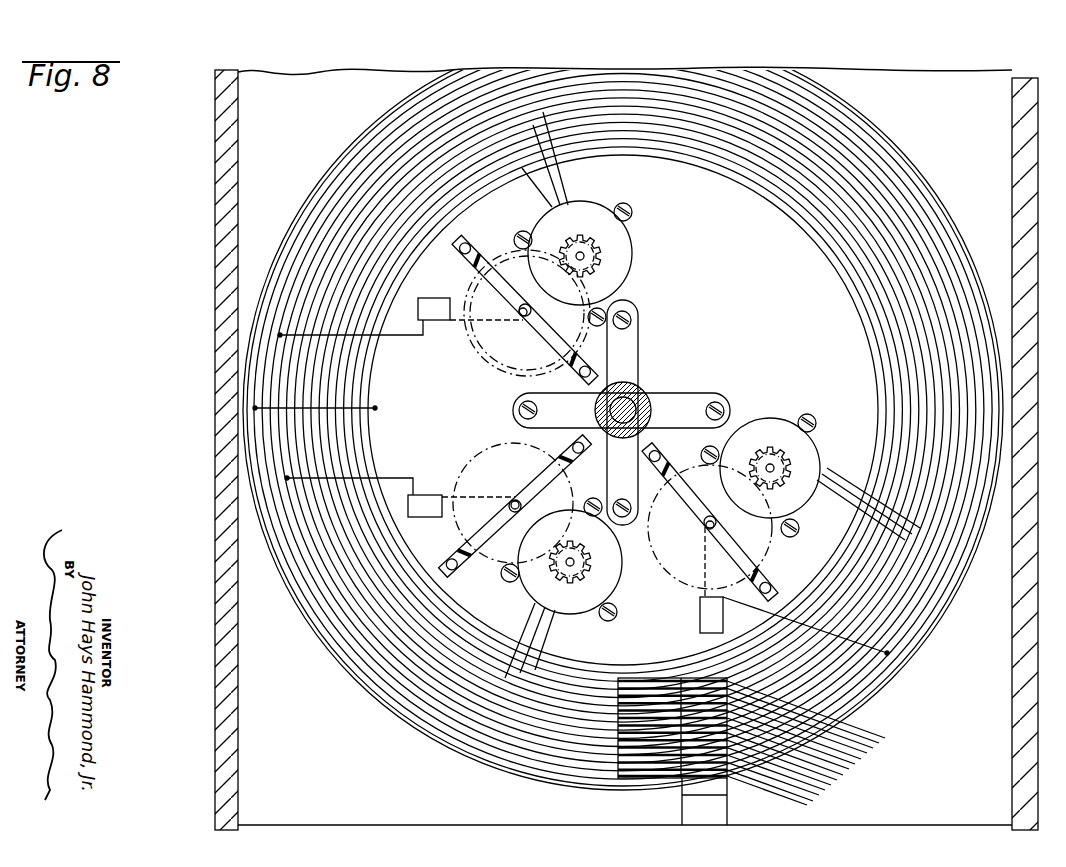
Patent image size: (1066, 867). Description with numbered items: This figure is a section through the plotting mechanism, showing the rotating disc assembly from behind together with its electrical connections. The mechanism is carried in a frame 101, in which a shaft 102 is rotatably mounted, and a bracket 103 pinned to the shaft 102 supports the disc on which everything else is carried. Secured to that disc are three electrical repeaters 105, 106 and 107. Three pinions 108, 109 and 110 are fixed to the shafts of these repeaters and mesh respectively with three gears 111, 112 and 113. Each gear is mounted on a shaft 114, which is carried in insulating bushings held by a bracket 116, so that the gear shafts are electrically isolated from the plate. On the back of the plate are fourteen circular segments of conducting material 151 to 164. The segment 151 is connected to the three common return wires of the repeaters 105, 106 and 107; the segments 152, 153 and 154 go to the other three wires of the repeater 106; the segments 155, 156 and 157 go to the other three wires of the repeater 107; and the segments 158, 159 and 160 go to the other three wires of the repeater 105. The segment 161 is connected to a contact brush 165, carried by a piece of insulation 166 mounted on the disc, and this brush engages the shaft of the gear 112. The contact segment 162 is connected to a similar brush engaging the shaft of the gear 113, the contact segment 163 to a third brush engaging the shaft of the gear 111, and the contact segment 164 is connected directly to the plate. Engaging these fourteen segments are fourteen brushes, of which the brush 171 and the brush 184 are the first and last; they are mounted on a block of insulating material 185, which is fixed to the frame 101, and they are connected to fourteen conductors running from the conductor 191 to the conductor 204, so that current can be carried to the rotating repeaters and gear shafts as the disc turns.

The frame 101 is at (225, 222).
The shaft 102 is at (645, 388).
The bracket 103 is at (627, 358).
The electrical repeater 105 is at (772, 418).
The electrical repeater 106 is at (620, 587).
The electrical repeater 107 is at (623, 240).
The pinion 108 is at (785, 466).
The pinion 109 is at (582, 565).
The pinion 110 is at (596, 257).
The gear 111 is at (772, 552).
The gear 112 is at (497, 445).
The gear 113 is at (486, 363).
The shaft 114 is at (518, 316).
The bracket 116 is at (492, 245).
The circular segment 151 is at (806, 233).
The circular segment 152 is at (828, 244).
The circular segment 153 is at (848, 258).
The circular segment 154 is at (867, 275).
The circular segment 155 is at (884, 288).
The circular segment 156 is at (899, 304).
The circular segment 157 is at (912, 316).
The circular segment 158 is at (924, 329).
The circular segment 159 is at (936, 343).
The circular segment 160 is at (947, 359).
The circular segment 161 is at (957, 372).
The contact segment 162 is at (967, 386).
The contact segment 163 is at (976, 401).
The contact segment 164 is at (984, 416).
The contact brush 165 is at (462, 322).
The piece of insulation 166 is at (440, 298).
The brush 171 is at (643, 678).
The brush 184 is at (650, 778).
The block of insulating material 185 is at (700, 795).
The conductor 191 is at (862, 724).
The conductor 204 is at (740, 800).